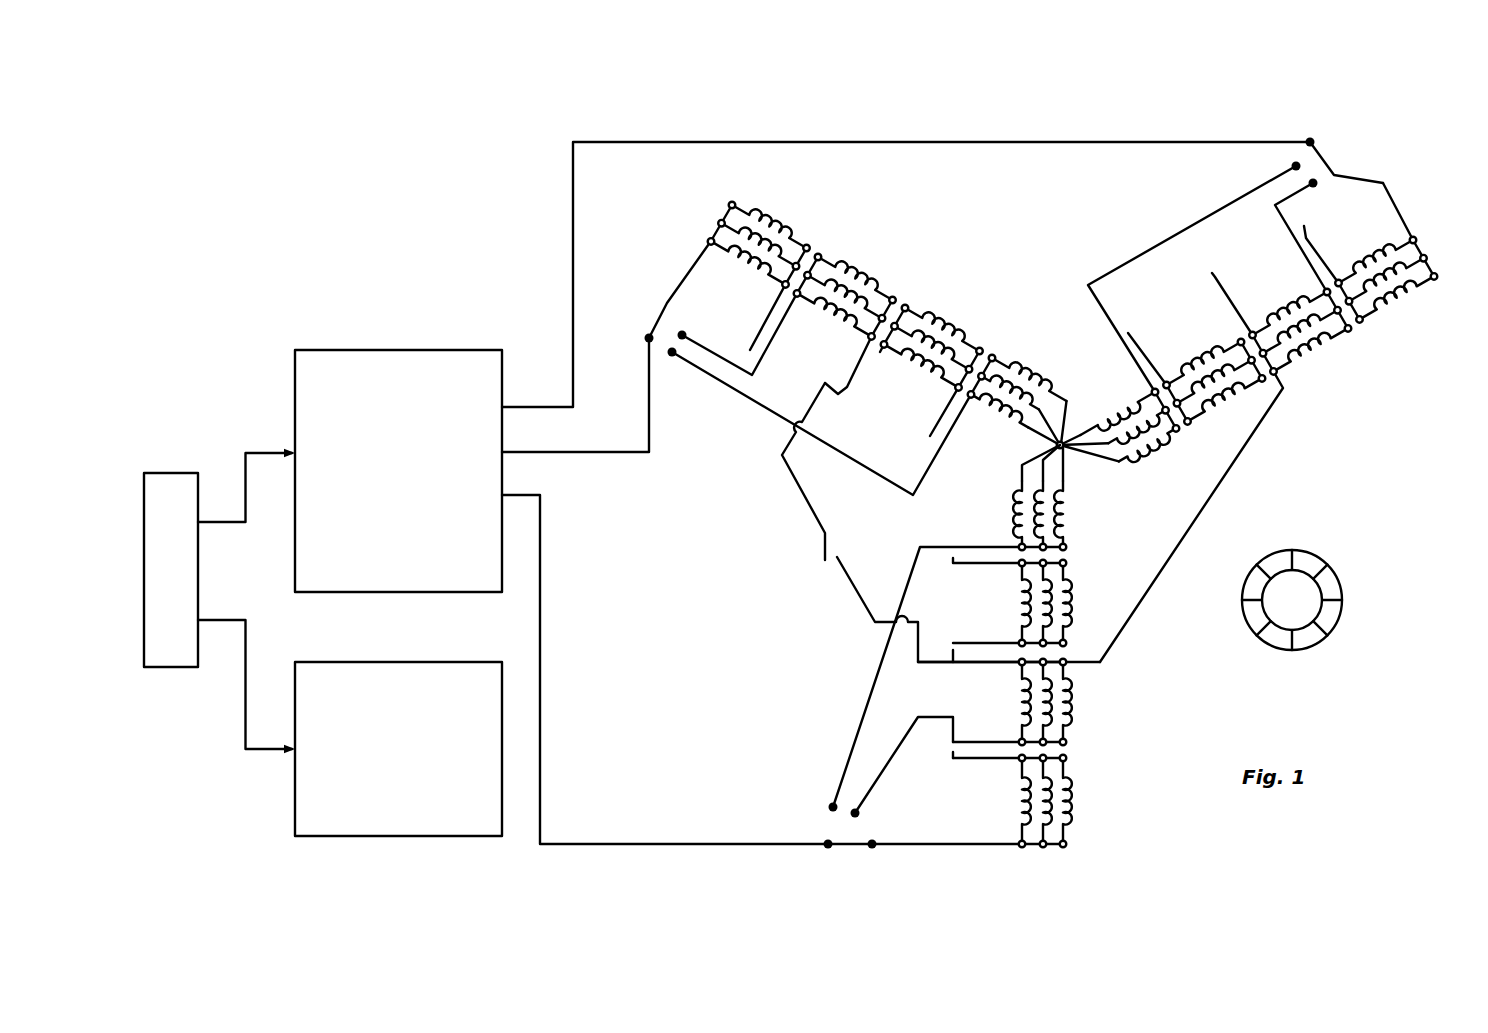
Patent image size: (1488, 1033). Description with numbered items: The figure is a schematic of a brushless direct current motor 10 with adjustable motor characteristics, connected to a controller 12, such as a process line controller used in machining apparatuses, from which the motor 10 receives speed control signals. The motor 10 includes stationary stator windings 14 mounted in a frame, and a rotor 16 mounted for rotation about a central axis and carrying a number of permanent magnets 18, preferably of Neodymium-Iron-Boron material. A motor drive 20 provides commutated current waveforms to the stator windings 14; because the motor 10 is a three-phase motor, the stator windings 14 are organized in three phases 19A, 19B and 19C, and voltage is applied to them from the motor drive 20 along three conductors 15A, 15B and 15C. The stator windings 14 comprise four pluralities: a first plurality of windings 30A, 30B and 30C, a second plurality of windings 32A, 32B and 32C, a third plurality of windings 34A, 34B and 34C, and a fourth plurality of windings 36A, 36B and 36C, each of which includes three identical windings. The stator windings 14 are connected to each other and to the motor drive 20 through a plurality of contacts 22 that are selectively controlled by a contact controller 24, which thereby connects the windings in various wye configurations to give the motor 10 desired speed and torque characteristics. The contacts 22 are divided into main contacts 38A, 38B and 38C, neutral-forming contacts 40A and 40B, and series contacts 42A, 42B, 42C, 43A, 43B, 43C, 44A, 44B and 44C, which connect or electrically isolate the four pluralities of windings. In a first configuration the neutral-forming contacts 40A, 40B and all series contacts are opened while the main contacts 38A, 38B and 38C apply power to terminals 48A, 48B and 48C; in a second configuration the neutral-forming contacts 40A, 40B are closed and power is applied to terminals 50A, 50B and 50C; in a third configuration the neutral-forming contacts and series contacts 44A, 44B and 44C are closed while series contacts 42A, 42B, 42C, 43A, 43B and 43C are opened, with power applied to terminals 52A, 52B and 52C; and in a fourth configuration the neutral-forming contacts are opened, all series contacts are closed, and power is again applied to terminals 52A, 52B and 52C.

The brushless direct current motor 10 is at (219, 274).
The controller 12 is at (186, 667).
The stator windings 14 is at (725, 174).
The conductor 15A is at (583, 452).
The conductor 15B is at (588, 142).
The conductor 15C is at (658, 844).
The rotor 16 is at (1328, 519).
The permanent magnets 18 is at (1268, 566).
The phase 19A is at (688, 221).
The phase 19B is at (1460, 196).
The phase 19C is at (1064, 857).
The motor drive 20 is at (380, 350).
The contacts 22 is at (765, 578).
The contact controller 24 is at (425, 662).
The winding 30A is at (1031, 359).
The winding 32A is at (941, 311).
The winding 34A is at (851, 263).
The winding 36A is at (771, 215).
The winding 30B is at (1122, 463).
The winding 32B is at (1217, 421).
The winding 34B is at (1327, 359).
The winding 36B is at (1400, 311).
The winding 30C is at (1083, 514).
The winding 32C is at (1082, 583).
The winding 34C is at (1084, 700).
The winding 36C is at (1084, 794).
The main contact 38A is at (645, 330).
The main contact 38B is at (1312, 140).
The main contact 38C is at (830, 850).
The neutral-forming contact 40A is at (822, 548).
The neutral-forming contact 40B is at (1188, 552).
The series contact 42A is at (920, 444).
The series contact 43A is at (838, 400).
The series contact 44A is at (747, 344).
The series contact 42B is at (1121, 326).
The series contact 43B is at (1212, 272).
The series contact 44B is at (1307, 236).
The series contact 42C is at (951, 565).
The series contact 43C is at (950, 652).
The series contact 44C is at (951, 762).
The terminal 48A is at (672, 357).
The terminal 48B is at (1292, 166).
The terminal 48C is at (830, 805).
The terminal 50A is at (683, 330).
The terminal 50B is at (1314, 186).
The terminal 50C is at (858, 812).
The terminal 52A is at (664, 298).
The terminal 52B is at (1340, 170).
The terminal 52C is at (871, 850).